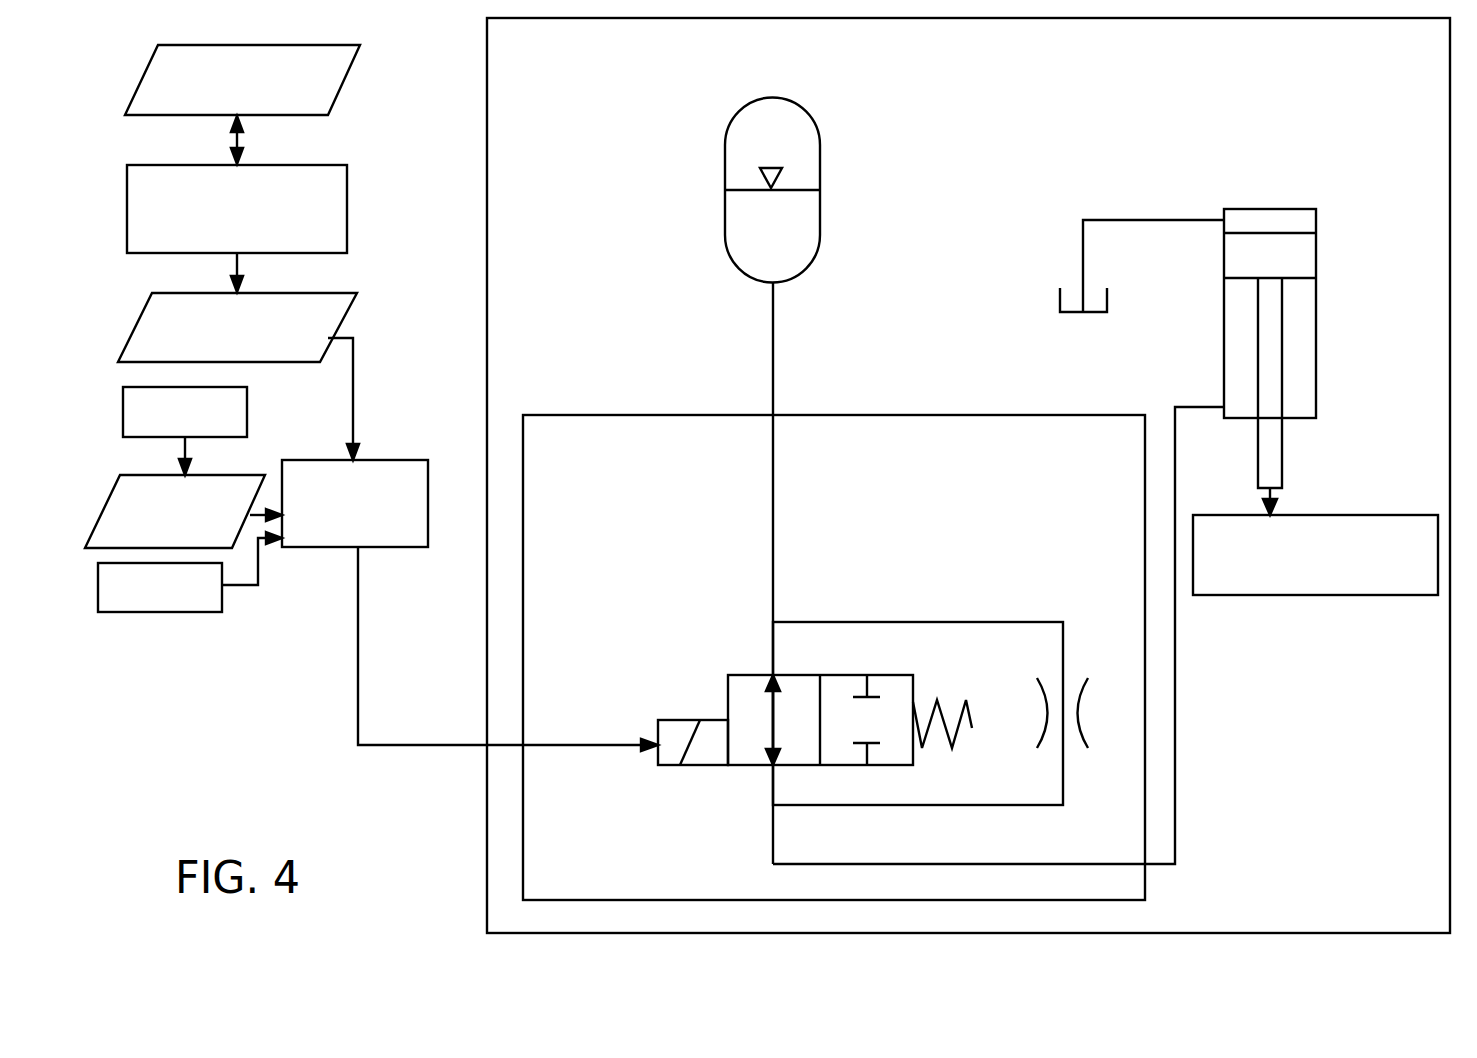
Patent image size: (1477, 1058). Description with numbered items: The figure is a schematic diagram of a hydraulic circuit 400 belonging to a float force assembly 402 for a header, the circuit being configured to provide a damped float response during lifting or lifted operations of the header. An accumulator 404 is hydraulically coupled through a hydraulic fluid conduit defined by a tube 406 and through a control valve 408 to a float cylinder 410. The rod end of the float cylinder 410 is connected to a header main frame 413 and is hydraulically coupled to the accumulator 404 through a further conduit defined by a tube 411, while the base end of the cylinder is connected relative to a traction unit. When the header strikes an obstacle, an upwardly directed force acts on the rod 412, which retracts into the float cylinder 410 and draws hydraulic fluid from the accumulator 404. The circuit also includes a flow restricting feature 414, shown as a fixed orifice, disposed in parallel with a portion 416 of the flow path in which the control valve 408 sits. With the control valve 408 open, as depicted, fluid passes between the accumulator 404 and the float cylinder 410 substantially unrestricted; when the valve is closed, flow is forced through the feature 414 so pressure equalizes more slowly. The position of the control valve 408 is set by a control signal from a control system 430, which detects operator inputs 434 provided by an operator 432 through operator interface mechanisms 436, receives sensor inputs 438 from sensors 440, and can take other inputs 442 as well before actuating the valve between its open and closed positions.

The hydraulic circuit 400 is at (834, 657).
The float force assembly 402 is at (968, 475).
The accumulator 404 is at (725, 182).
The tube 406 is at (773, 348).
The control valve 408 is at (908, 675).
The float cylinder 410 is at (1257, 209).
The tube 411 is at (1175, 700).
The rod 412 is at (1282, 383).
The header main frame 413 is at (1315, 555).
The flow restricting feature 414 is at (1073, 717).
The portion of the flow path 416 is at (773, 650).
The control system 430 is at (413, 525).
The operator 432 is at (258, 101).
The operator inputs 434 is at (297, 348).
The operator interface mechanism 436 is at (328, 241).
The sensor inputs 438 is at (190, 546).
The sensors 440 is at (198, 433).
The other inputs 442 is at (212, 598).